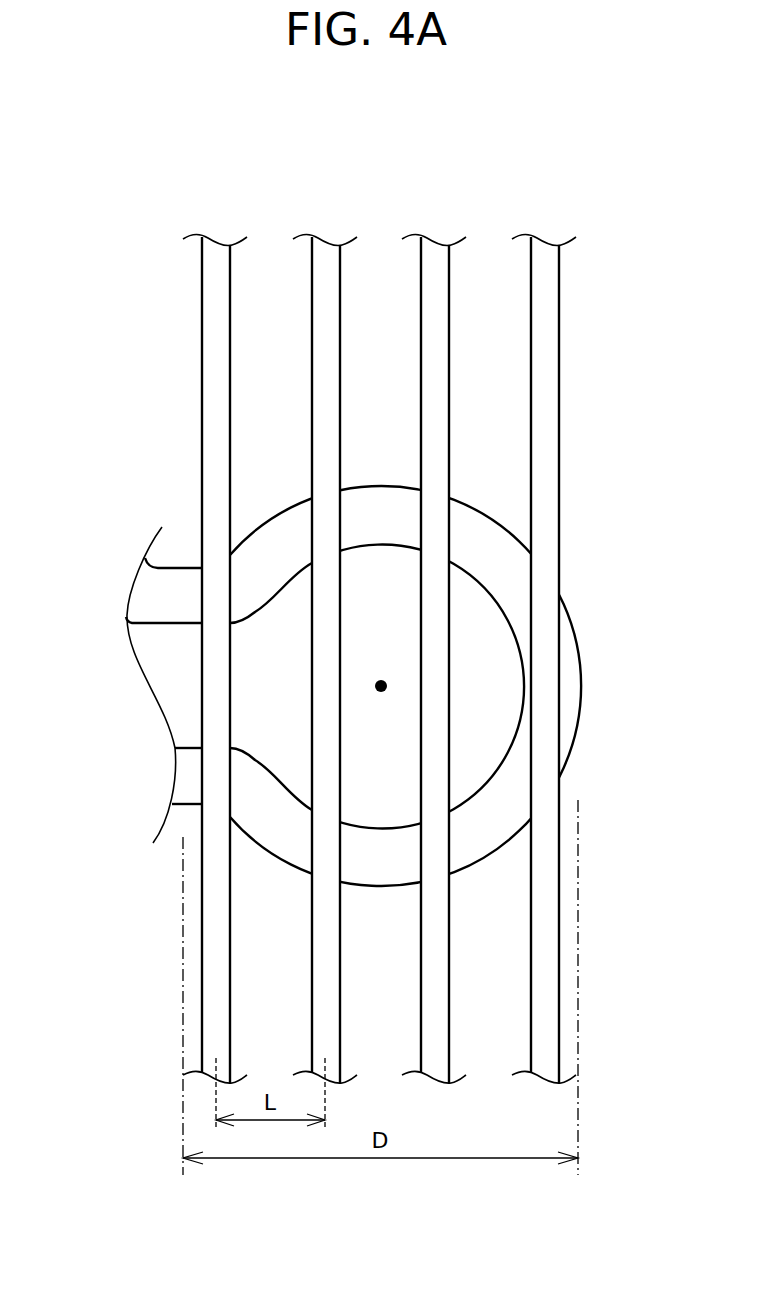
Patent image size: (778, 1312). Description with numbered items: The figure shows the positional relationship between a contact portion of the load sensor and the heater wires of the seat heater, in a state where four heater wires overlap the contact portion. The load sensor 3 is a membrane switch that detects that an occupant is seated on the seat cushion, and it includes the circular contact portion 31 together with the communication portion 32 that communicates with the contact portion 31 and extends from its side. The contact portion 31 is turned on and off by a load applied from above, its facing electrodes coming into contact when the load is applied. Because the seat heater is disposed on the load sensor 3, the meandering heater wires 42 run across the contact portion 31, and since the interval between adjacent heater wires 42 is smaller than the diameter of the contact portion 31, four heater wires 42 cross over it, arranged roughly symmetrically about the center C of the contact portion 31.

The load sensor 3 is at (358, 642).
The contact portion 31 is at (492, 517).
The communication portion 32 is at (177, 670).
The heater wire 42 is at (218, 272).
The center of the contact portion C is at (381, 693).